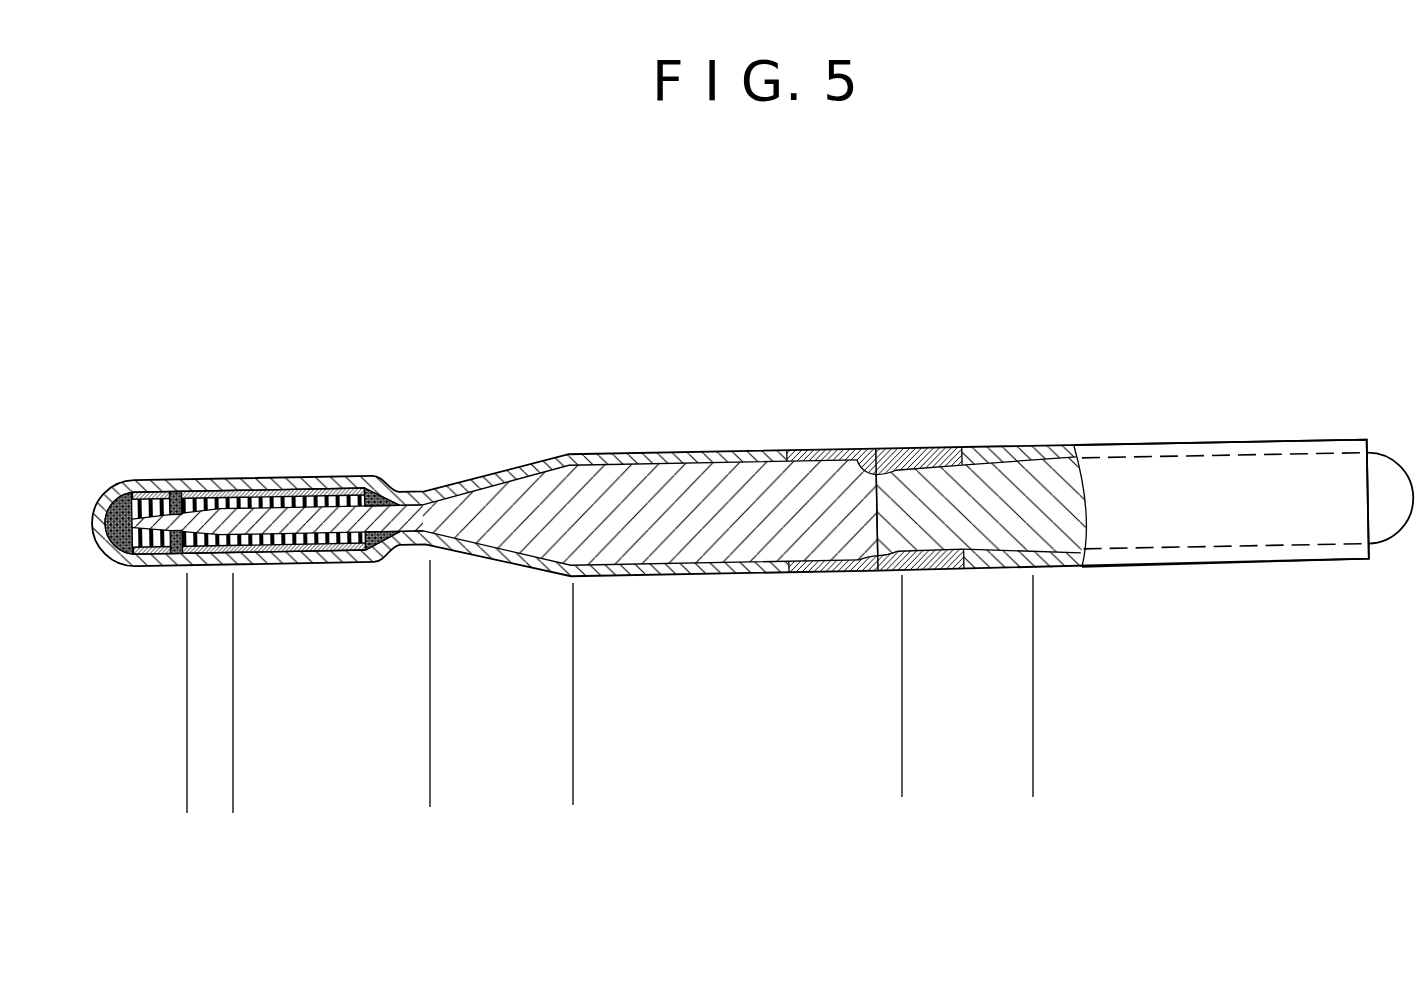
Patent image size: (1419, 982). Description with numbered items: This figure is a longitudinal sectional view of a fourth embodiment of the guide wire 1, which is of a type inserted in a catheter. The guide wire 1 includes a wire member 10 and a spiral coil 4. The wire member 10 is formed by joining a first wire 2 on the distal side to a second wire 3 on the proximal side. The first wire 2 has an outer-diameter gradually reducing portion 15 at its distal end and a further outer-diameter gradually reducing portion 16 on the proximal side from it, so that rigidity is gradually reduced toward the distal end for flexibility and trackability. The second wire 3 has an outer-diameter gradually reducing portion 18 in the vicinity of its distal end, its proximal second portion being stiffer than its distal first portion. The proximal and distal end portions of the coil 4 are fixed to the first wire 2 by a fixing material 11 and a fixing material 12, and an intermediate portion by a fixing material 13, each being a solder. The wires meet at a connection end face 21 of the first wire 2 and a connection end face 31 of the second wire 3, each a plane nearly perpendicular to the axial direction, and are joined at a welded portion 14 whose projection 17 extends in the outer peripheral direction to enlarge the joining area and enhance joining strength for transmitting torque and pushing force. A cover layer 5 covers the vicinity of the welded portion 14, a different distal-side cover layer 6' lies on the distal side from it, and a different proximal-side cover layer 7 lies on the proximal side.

The guide wire 1 is at (860, 305).
The first wire 2 is at (693, 497).
The second wire 3 is at (1037, 492).
The spiral coil 4 is at (303, 492).
The cover layer 5 is at (821, 449).
The distal-side cover layer 6' is at (475, 558).
The proximal-side cover layer 7 is at (997, 447).
The wire member 10 is at (1066, 566).
The fixing material 11 is at (373, 482).
The fixing material 12 is at (120, 482).
The fixing material 13 is at (180, 492).
The welded portion 14 is at (877, 577).
The outer-diameter gradually reducing portion 15 is at (187, 783).
The outer-diameter gradually reducing portion 16 is at (430, 780).
The projection 17 is at (877, 446).
The outer-diameter gradually reducing portion 18 is at (902, 771).
The connection end face 21 is at (914, 449).
The connection end face 31 is at (872, 512).